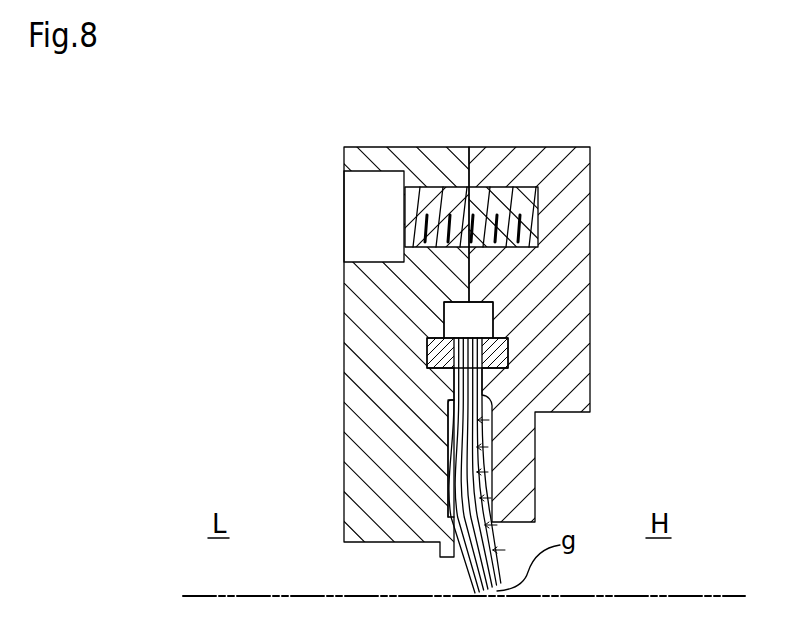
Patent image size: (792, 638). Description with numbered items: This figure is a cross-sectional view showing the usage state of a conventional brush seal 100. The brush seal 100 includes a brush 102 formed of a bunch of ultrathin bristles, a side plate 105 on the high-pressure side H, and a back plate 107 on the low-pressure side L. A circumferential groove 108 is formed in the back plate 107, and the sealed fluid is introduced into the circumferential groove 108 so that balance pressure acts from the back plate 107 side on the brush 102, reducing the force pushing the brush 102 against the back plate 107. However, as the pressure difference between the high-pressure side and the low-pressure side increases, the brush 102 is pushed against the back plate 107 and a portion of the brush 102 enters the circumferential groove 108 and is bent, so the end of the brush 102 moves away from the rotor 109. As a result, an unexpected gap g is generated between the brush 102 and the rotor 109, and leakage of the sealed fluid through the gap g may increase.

The brush seal 100 is at (620, 175).
The brush 102 is at (468, 384).
The side plate 105 is at (589, 226).
The back plate 107 is at (357, 325).
The circumferential groove 108 is at (448, 406).
The rotor 109 is at (727, 596).